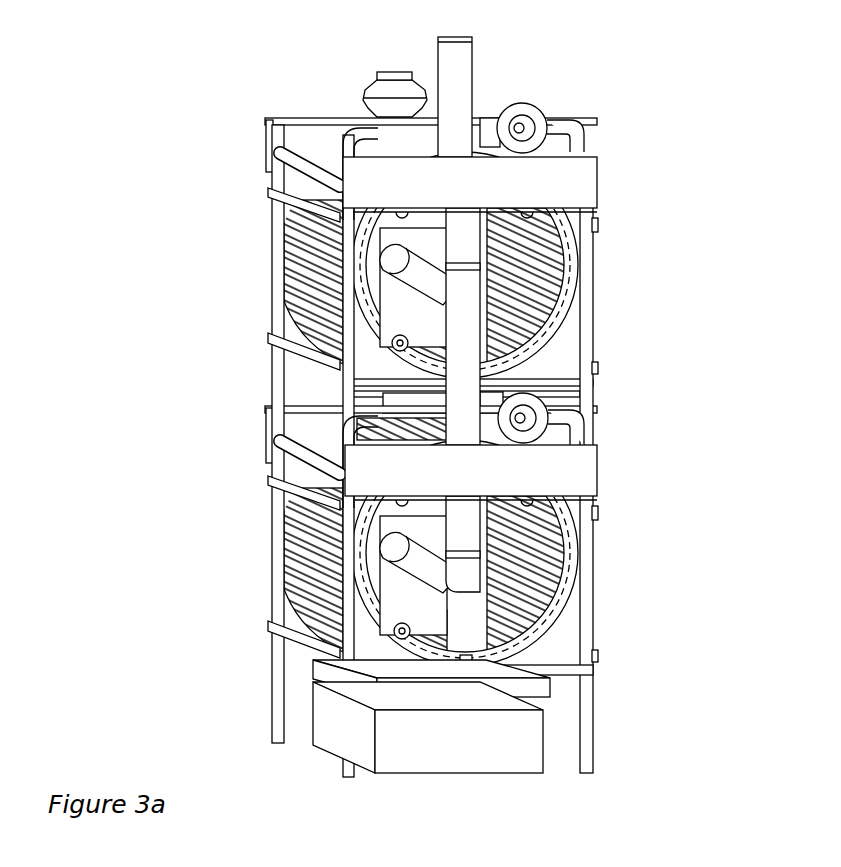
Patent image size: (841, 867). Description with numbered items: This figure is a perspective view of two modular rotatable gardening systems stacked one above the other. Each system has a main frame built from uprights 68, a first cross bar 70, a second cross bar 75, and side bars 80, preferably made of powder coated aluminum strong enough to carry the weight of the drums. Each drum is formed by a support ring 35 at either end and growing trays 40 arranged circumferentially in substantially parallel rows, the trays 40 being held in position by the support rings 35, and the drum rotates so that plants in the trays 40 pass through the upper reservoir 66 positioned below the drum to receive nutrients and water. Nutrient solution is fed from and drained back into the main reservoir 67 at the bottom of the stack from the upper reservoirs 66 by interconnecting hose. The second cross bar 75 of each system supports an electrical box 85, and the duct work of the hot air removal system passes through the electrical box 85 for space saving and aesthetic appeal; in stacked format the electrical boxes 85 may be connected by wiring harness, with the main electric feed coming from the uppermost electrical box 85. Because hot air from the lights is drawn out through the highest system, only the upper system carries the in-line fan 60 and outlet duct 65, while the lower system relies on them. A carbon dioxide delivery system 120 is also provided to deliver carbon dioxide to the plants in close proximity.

The support ring 35 is at (277, 232).
The growing trays 40 is at (290, 263).
The in-line fan 60 is at (393, 72).
The outlet duct 65 is at (450, 37).
The upper reservoir 66 is at (537, 687).
The main reservoir 67 is at (527, 752).
The uprights 68 is at (585, 290).
The first cross bar 70 is at (572, 670).
The second cross bar 75 is at (545, 209).
The side bars 80 is at (268, 197).
The electrical box 85 is at (585, 173).
The carbon dioxide delivery system 120 is at (567, 84).